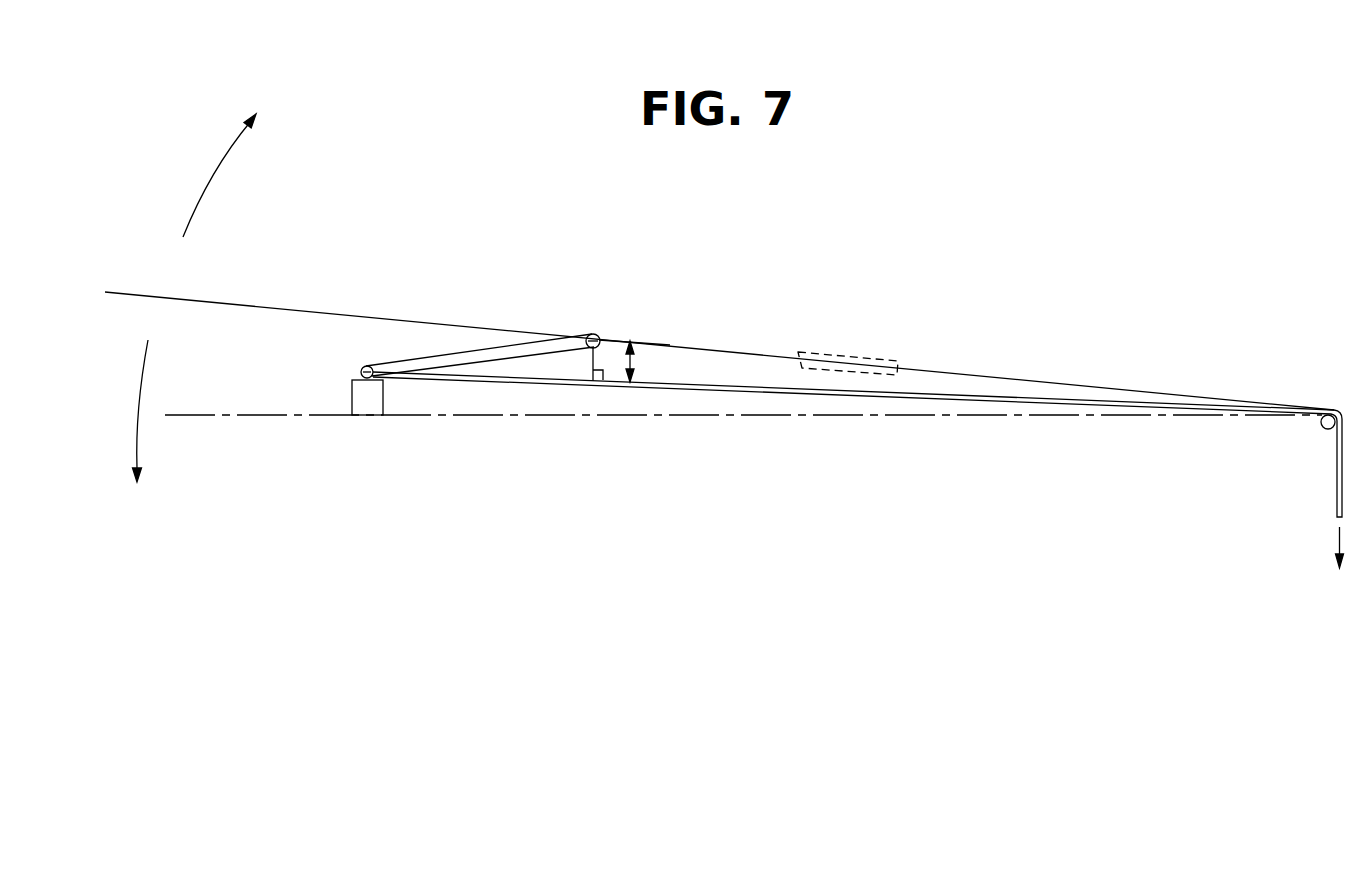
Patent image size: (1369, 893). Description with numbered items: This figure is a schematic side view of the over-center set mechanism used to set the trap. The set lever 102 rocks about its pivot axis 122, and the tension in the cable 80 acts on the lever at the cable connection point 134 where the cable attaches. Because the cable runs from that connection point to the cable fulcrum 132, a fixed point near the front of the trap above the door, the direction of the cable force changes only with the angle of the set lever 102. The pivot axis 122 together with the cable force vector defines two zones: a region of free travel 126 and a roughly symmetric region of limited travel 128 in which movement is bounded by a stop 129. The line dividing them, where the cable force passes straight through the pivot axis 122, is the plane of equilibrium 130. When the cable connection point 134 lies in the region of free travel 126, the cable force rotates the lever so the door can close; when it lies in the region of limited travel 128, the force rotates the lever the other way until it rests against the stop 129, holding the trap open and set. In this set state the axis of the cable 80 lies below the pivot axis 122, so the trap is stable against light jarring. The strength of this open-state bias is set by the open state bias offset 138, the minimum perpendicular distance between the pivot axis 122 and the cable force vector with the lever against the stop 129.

The cable 80 is at (823, 394).
The set lever 102 is at (447, 342).
The pivot axis 122 is at (602, 326).
The region of free travel 126 is at (213, 173).
The region of limited travel 128 is at (143, 378).
The stop 129 is at (354, 400).
The plane of equilibrium 130 is at (362, 316).
The cable fulcrum 132 is at (1326, 428).
The cable connection point 134 is at (363, 369).
The open state bias offset 138 is at (629, 366).